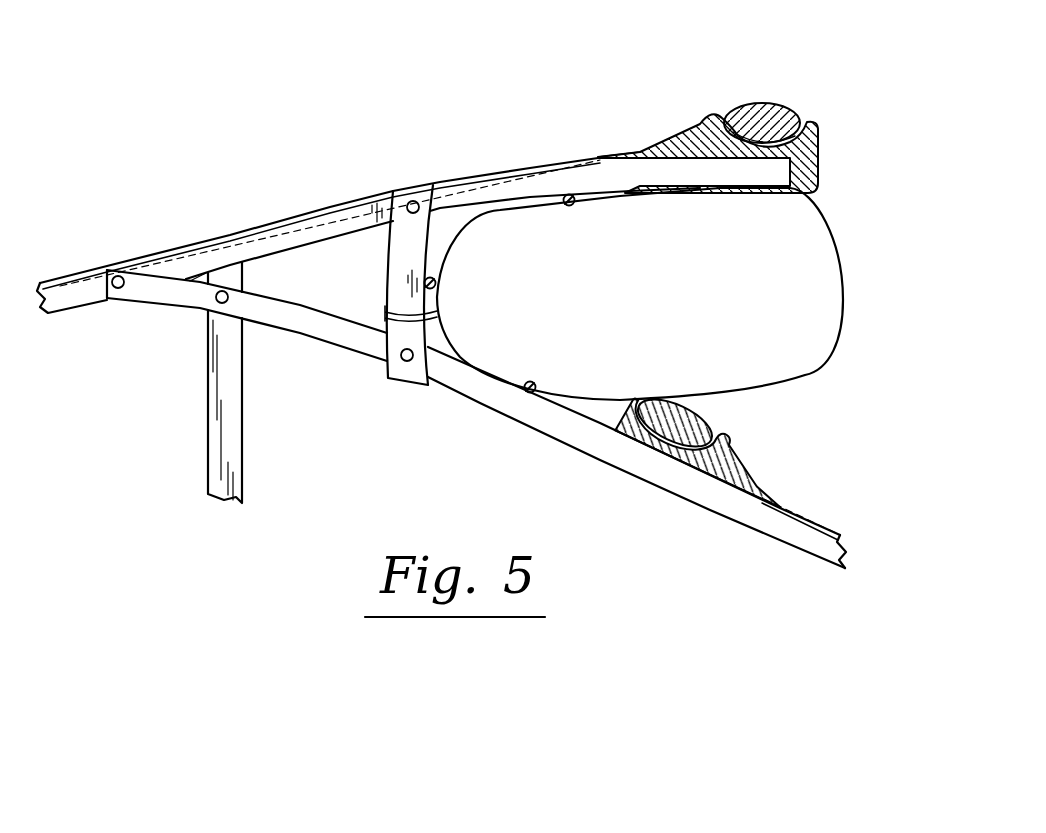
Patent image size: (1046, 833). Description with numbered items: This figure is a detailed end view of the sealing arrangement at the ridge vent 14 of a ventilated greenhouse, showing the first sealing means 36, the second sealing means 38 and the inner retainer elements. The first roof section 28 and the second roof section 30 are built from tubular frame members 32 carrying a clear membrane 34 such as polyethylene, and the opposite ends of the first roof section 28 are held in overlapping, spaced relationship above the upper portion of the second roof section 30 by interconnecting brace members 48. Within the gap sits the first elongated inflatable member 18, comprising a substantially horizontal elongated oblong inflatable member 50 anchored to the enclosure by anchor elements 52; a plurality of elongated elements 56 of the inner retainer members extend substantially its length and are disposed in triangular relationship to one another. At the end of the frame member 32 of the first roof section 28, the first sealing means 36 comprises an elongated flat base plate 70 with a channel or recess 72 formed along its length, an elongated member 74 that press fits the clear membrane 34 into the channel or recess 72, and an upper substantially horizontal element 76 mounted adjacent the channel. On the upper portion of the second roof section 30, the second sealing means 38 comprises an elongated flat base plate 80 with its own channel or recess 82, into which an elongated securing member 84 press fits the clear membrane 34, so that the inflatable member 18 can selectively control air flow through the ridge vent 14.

The ridge vent 14 is at (343, 246).
The first elongated inflatable member 18 is at (661, 294).
The first roof section 28 is at (307, 195).
The second roof section 30 is at (610, 490).
The frame member 32 is at (441, 360).
The clear membrane 34 is at (807, 513).
The first sealing means 36 is at (736, 115).
The second sealing means 38 is at (726, 430).
The interconnecting brace member 48 is at (394, 261).
The elongated oblong inflatable member 50 is at (836, 262).
The anchor element 52 is at (386, 314).
The elongated element 56 is at (438, 284).
The elongated flat base plate 70 is at (670, 146).
The channel or recess 72 is at (796, 112).
The elongated member 74 is at (767, 105).
The upper substantially horizontal element 76 is at (772, 150).
The elongated flat base plate 80 is at (751, 489).
The channel or recess 82 is at (700, 423).
The elongated securing member 84 is at (700, 405).